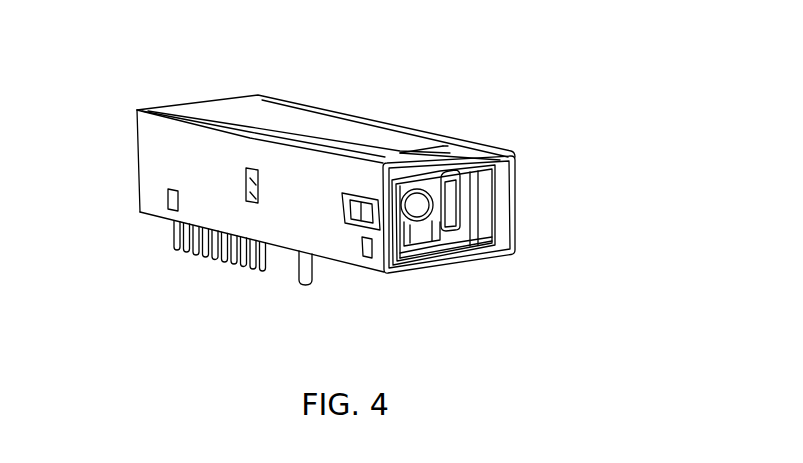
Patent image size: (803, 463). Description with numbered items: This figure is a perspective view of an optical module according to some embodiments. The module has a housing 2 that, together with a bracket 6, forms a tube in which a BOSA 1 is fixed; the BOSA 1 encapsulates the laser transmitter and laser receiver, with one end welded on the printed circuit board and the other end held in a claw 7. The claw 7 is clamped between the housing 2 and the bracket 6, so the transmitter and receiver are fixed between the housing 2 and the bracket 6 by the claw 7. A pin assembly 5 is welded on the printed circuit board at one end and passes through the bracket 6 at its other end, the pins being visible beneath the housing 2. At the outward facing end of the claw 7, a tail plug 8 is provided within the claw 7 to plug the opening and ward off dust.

The BOSA 1 is at (420, 228).
The housing 2 is at (337, 115).
The pin assembly 5 is at (178, 241).
The bracket 6 is at (490, 258).
The claw 7 is at (497, 216).
The tail plug 8 is at (457, 205).